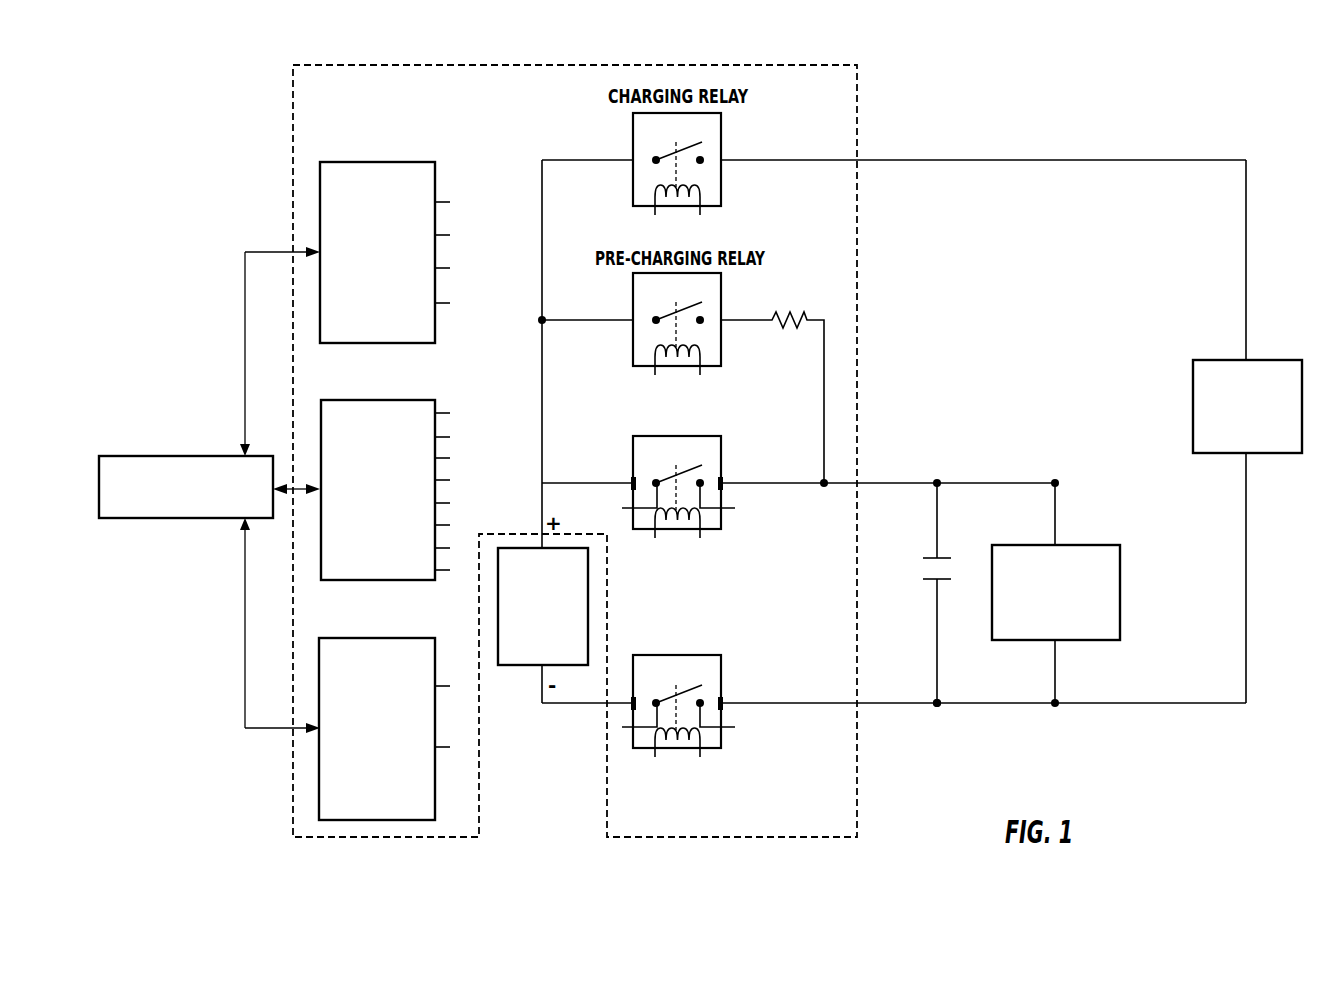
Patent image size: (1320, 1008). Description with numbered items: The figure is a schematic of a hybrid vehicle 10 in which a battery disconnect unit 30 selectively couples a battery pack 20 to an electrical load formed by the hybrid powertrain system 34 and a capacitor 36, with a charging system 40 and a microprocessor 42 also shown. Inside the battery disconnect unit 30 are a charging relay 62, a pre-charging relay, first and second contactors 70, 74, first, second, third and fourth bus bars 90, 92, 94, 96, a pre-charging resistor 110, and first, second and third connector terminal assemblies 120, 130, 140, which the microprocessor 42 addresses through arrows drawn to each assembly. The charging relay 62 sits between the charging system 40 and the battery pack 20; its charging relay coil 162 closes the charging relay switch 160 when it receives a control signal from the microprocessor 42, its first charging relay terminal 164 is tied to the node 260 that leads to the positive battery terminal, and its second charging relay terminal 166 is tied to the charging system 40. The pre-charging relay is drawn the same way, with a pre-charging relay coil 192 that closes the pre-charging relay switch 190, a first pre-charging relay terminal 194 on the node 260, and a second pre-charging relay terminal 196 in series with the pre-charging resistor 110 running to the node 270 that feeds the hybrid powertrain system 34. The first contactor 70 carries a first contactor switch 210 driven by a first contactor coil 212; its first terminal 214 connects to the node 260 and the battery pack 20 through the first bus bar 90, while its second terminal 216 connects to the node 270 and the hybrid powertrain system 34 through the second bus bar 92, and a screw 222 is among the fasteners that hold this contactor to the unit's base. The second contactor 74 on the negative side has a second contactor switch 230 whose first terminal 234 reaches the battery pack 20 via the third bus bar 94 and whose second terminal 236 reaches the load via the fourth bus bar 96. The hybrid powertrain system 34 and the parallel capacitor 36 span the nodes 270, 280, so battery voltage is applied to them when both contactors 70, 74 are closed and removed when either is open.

The hybrid vehicle 10 is at (1138, 86).
The battery pack 20 is at (516, 667).
The battery disconnect unit 30 is at (865, 107).
The hybrid powertrain system 34 is at (1100, 545).
The capacitor 36 is at (940, 557).
The charging system 40 is at (1278, 360).
The microprocessor 42 is at (163, 456).
The charging relay 62 is at (722, 135).
The first contactor 70 is at (722, 445).
The second contactor 74 is at (652, 655).
The first bus bar 90 is at (633, 480).
The second bus bar 92 is at (722, 480).
The third bus bar 94 is at (633, 702).
The fourth bus bar 96 is at (722, 702).
The pre-charging resistor 110 is at (790, 313).
The first connector terminal assembly 120 is at (378, 162).
The second connector terminal assembly 130 is at (378, 400).
The third connector terminal assembly 140 is at (378, 638).
The charging relay switch 160 is at (692, 147).
The charging relay coil 162 is at (700, 197).
The first charging relay terminal 164 is at (655, 163).
The second charging relay terminal 166 is at (701, 163).
The pre-charging relay switch 190 is at (692, 307).
The pre-charging relay coil 192 is at (700, 357).
The first pre-charging relay terminal 194 is at (655, 323).
The second pre-charging relay terminal 196 is at (701, 323).
The first contactor switch 210 is at (692, 470).
The first contactor coil 212 is at (700, 520).
The first terminal of first contactor 214 is at (657, 486).
The second terminal of first contactor 216 is at (703, 485).
The screw 222 is at (700, 740).
The second contactor switch 230 is at (692, 690).
The first terminal of second contactor 234 is at (657, 706).
The second terminal of second contactor 236 is at (702, 702).
The node 260 is at (544, 320).
The node 270 is at (828, 482).
The node 280 is at (937, 707).